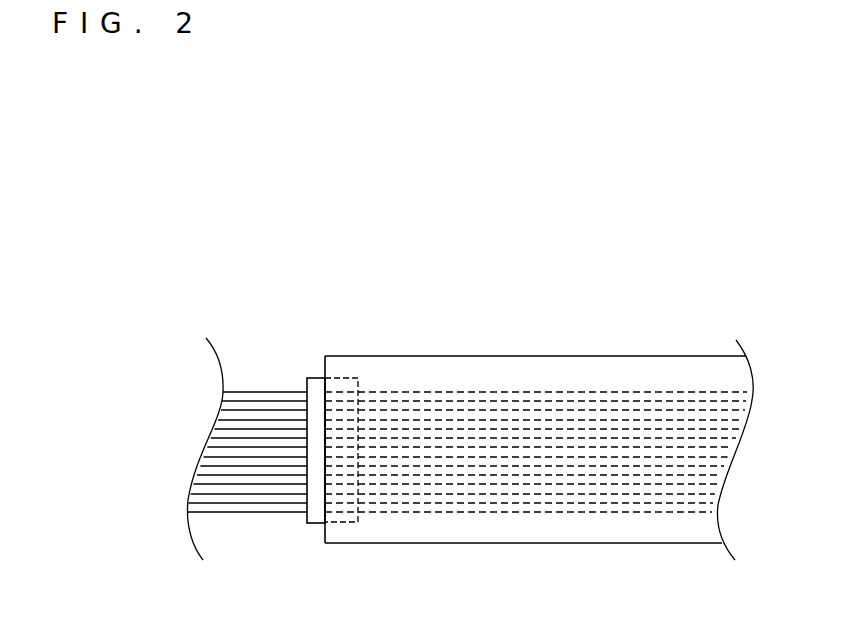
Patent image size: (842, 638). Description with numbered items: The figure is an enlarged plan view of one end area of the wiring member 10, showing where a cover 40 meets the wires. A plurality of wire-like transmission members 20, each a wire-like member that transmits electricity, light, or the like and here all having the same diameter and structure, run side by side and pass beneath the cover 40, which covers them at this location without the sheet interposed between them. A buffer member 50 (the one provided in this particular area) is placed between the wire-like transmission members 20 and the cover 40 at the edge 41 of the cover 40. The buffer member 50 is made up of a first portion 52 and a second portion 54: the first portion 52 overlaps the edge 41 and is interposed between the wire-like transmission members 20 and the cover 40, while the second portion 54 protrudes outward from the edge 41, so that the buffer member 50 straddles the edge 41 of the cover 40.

The wiring member 10 is at (160, 188).
The wire-like transmission member 20 is at (248, 508).
The cover 40 is at (539, 477).
The edge of the cover 41 is at (343, 531).
The buffer member 50 is at (353, 393).
The first portion 52 is at (347, 378).
The second portion 54 is at (316, 378).